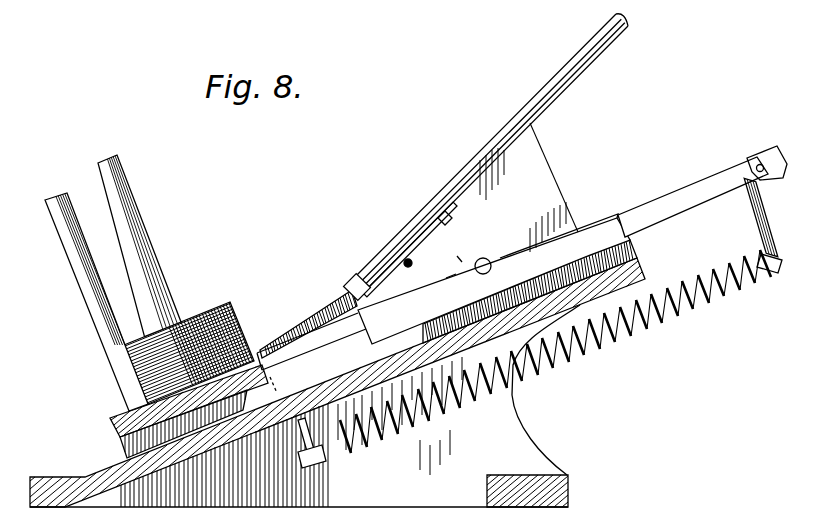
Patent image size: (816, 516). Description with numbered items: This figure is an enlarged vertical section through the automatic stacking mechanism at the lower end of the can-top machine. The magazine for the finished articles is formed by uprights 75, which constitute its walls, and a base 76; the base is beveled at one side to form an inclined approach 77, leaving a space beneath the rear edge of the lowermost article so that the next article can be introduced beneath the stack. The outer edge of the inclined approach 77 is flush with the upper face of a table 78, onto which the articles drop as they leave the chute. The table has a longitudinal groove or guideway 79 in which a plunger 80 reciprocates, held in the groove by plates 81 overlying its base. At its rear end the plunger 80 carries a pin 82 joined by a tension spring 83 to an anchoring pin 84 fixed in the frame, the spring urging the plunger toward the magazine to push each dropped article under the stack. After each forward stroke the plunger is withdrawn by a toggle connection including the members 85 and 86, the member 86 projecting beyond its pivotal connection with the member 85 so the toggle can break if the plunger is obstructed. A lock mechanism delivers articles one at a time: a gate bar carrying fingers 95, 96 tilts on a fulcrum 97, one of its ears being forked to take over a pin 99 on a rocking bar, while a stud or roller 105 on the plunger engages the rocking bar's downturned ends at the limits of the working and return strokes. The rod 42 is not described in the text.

The threaded feed rod 42 is at (508, 135).
The uprights 75 is at (147, 262).
The base 76 is at (127, 416).
The inclined approach 77 is at (258, 353).
The table 78 is at (406, 357).
The longitudinal groove or guideway 79 is at (462, 297).
The plunger 80 is at (668, 207).
The plates 81 is at (591, 225).
The pin 82 is at (753, 232).
The tension spring 83 is at (423, 427).
The anchoring pin 84 is at (306, 466).
The toggle member 85 is at (778, 150).
The toggle member 86 is at (450, 278).
The finger 95 is at (450, 213).
The finger 96 is at (352, 283).
The fulcrum 97 is at (407, 268).
The pin 99 is at (457, 256).
The stud or roller 105 is at (488, 260).